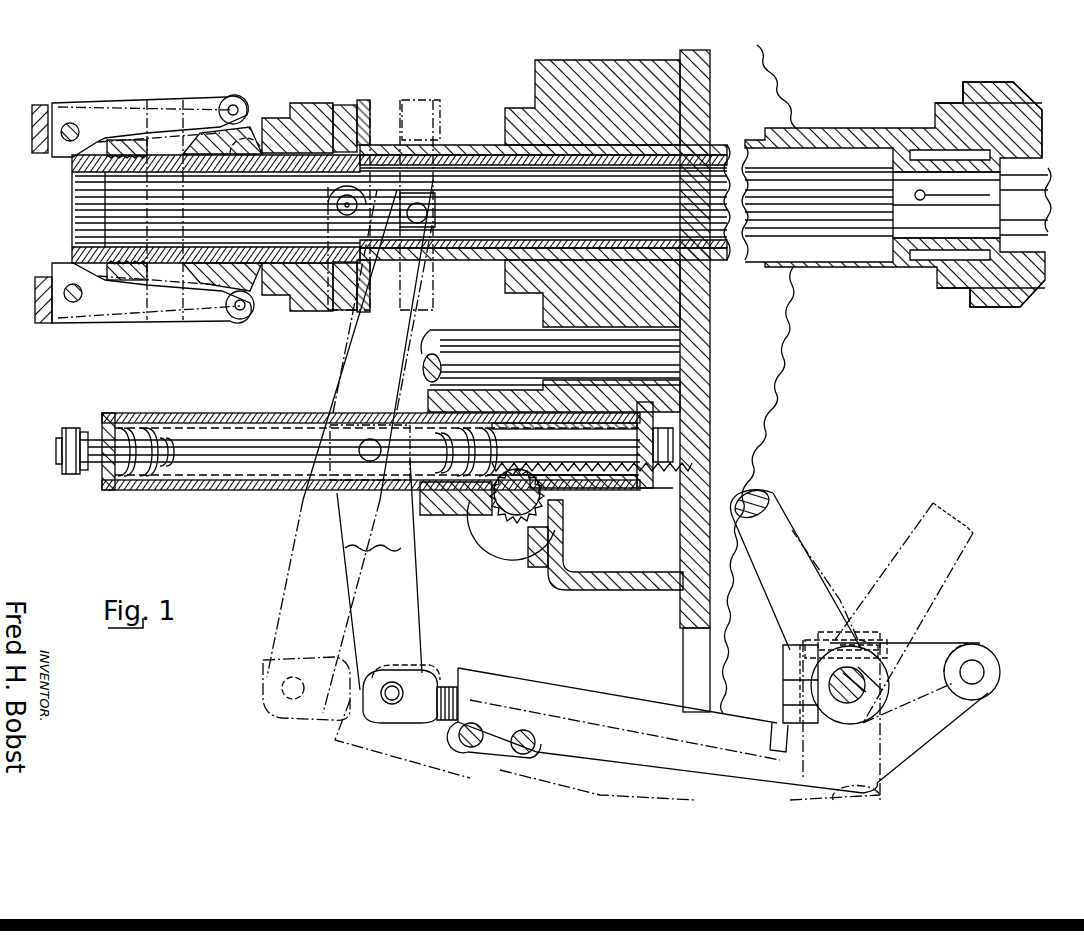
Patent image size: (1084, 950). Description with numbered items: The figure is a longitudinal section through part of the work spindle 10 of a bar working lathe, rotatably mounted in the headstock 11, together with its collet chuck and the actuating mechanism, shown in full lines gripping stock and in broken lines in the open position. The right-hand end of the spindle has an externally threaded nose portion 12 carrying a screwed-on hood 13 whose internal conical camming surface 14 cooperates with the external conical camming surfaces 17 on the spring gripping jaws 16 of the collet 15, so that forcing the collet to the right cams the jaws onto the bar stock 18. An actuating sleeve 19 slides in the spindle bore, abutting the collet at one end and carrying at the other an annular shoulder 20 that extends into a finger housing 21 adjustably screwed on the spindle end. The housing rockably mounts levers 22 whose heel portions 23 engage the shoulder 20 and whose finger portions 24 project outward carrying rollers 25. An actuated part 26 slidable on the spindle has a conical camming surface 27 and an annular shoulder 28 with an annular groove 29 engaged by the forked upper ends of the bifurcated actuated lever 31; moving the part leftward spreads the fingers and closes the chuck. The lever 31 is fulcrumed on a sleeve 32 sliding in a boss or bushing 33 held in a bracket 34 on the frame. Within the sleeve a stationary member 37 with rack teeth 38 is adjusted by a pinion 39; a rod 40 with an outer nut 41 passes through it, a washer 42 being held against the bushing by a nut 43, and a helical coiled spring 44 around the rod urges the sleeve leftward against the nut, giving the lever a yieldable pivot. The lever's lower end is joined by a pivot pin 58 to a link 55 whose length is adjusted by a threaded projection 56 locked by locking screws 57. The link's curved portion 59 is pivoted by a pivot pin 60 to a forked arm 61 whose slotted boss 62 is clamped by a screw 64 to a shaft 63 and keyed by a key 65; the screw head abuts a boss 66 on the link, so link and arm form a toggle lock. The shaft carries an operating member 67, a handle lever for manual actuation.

The work spindle 10 is at (708, 142).
The headstock 11 is at (708, 311).
The nose portion 12 is at (946, 107).
The hood 13 is at (1004, 81).
The conical camming surface 14 is at (1022, 113).
The collet 15 is at (929, 262).
The spring gripping jaws 16 is at (1042, 210).
The external conical camming surfaces 17 is at (1026, 282).
The bar stock 18 is at (1044, 169).
The actuating sleeve 19 is at (484, 147).
The annular shoulder 20 is at (76, 168).
The finger housing 21 is at (32, 118).
The levers 22 is at (162, 105).
The heel portions 23 is at (52, 162).
The finger portions 24 is at (214, 103).
The rollers 25 is at (252, 105).
The actuated part 26 is at (306, 103).
The conical camming surface 27 is at (245, 121).
The annular shoulder 28 is at (294, 99).
The annular groove 29 is at (354, 109).
The actuated lever 31 is at (414, 583).
The sleeve 32 is at (244, 416).
The boss or bushing 33 is at (522, 566).
The bracket 34 is at (618, 592).
The stationary member 37 is at (656, 415).
The rack teeth 38 is at (636, 490).
The pinion 39 is at (494, 500).
The rod 40 is at (236, 458).
The nut 41 is at (74, 430).
The washer 42 is at (658, 494).
The nut 43 is at (662, 466).
The helical coiled spring 44 is at (138, 476).
The link 55 is at (626, 699).
The projection 56 is at (440, 681).
The locking screws 57 is at (510, 748).
The pivot pin 58 is at (391, 718).
The curved portion 59 is at (915, 752).
The pivot pin 60 is at (978, 662).
The forked arm 61 is at (940, 646).
The boss 62 is at (816, 637).
The shaft 63 is at (882, 637).
The screw 64 is at (782, 717).
The key 65 is at (846, 716).
The boss 66 is at (778, 750).
The operating member 67 is at (786, 534).